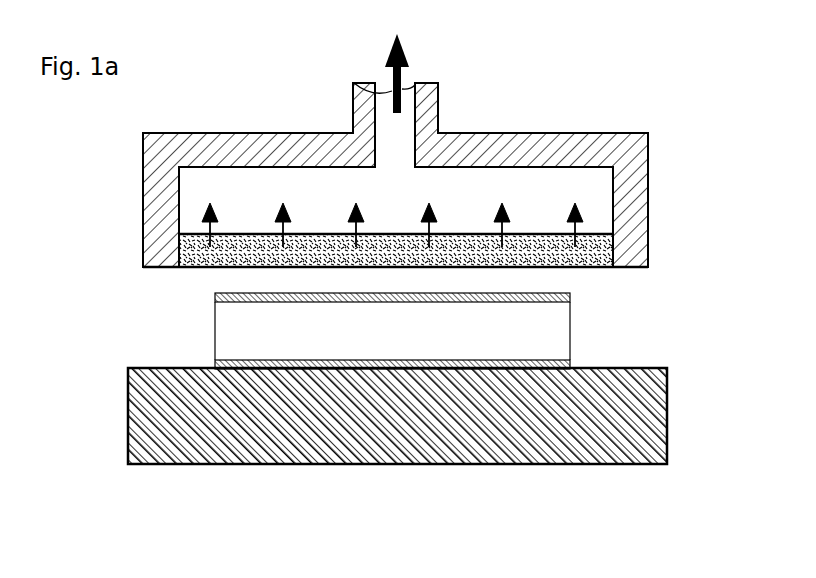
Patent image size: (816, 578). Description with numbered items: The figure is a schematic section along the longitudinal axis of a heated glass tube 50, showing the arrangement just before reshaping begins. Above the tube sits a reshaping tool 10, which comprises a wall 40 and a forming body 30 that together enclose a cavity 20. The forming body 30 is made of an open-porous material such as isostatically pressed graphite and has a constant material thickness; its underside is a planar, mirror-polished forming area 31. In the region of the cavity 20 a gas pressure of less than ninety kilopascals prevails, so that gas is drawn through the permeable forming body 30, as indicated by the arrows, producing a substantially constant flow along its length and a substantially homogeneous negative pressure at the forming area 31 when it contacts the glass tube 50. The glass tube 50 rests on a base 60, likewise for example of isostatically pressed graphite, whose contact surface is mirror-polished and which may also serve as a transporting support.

The reshaping tool 10 is at (522, 80).
The cavity 20 is at (226, 185).
The forming body 30 is at (590, 247).
The forming area 31 is at (203, 266).
The wall 40 is at (587, 133).
The glass tube 50 is at (570, 348).
The base 60 is at (432, 452).